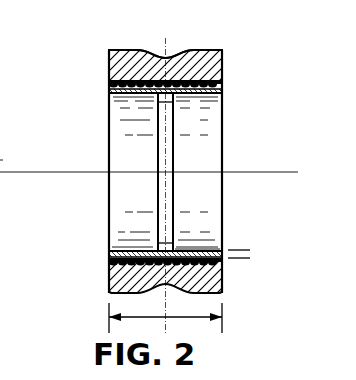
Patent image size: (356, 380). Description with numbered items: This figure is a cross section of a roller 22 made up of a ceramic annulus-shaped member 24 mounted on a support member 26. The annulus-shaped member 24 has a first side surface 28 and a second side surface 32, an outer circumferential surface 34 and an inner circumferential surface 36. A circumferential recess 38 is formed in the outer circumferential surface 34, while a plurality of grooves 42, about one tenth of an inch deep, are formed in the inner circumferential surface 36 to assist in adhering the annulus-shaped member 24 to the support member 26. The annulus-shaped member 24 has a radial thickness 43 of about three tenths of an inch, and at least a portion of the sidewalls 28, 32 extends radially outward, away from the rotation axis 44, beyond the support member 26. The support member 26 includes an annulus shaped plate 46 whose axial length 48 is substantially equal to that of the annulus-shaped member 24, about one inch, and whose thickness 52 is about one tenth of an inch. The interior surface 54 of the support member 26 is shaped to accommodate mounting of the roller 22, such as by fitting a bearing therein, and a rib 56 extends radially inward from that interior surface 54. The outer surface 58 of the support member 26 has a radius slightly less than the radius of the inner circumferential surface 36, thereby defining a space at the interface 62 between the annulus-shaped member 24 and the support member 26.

The roller 22 is at (107, 44).
The annulus-shaped member 24 is at (220, 50).
The support member 26 is at (222, 97).
The first side surface 28 is at (108, 68).
The second side surface 32 is at (222, 72).
The outer circumferential surface 34 is at (210, 49).
The inner circumferential surface 36 is at (172, 92).
The circumferential recess 38 is at (164, 50).
The grooves 42 is at (177, 105).
The radial thickness 43 is at (103, 258).
The rotation axis 44 is at (200, 172).
The annulus shaped plate 46 is at (110, 86).
The axial length 48 is at (192, 320).
The thickness 52 is at (238, 230).
The interior surface 54 is at (200, 245).
The rib 56 is at (163, 243).
The outer surface 58 is at (205, 262).
The interface 62 is at (110, 258).